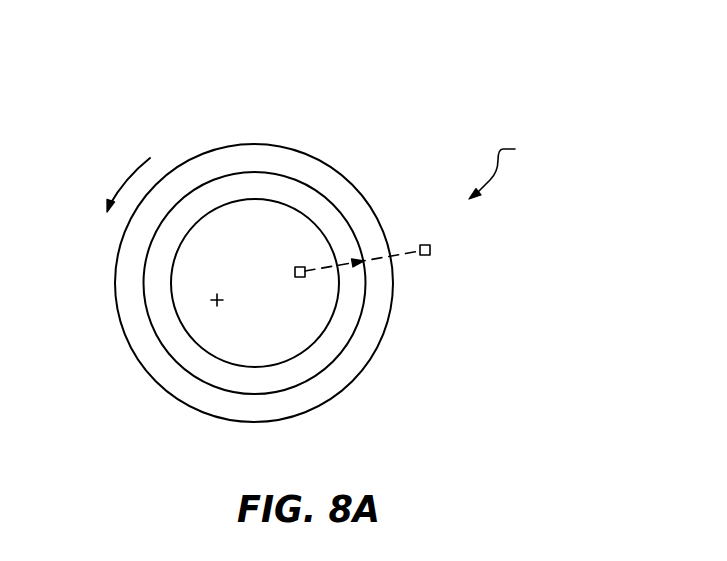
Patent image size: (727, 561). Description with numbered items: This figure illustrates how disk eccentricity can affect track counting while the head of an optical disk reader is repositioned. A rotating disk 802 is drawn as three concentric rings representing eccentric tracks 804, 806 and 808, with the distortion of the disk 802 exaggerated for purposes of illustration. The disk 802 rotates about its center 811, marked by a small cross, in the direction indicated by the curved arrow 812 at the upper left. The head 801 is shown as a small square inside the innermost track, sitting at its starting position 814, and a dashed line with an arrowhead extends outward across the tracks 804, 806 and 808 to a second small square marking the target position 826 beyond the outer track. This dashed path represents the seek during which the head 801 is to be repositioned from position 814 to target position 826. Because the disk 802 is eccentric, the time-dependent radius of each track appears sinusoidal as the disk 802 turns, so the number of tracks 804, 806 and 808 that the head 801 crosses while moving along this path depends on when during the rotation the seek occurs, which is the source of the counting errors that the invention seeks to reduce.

The head 801 is at (300, 277).
The rotating disk 802 is at (513, 169).
The eccentric track 804 is at (257, 198).
The eccentric track 806 is at (291, 176).
The eccentric track 808 is at (347, 178).
The center 811 is at (207, 304).
The arrow 812 is at (121, 180).
The position 814 is at (295, 272).
The target position 826 is at (428, 255).